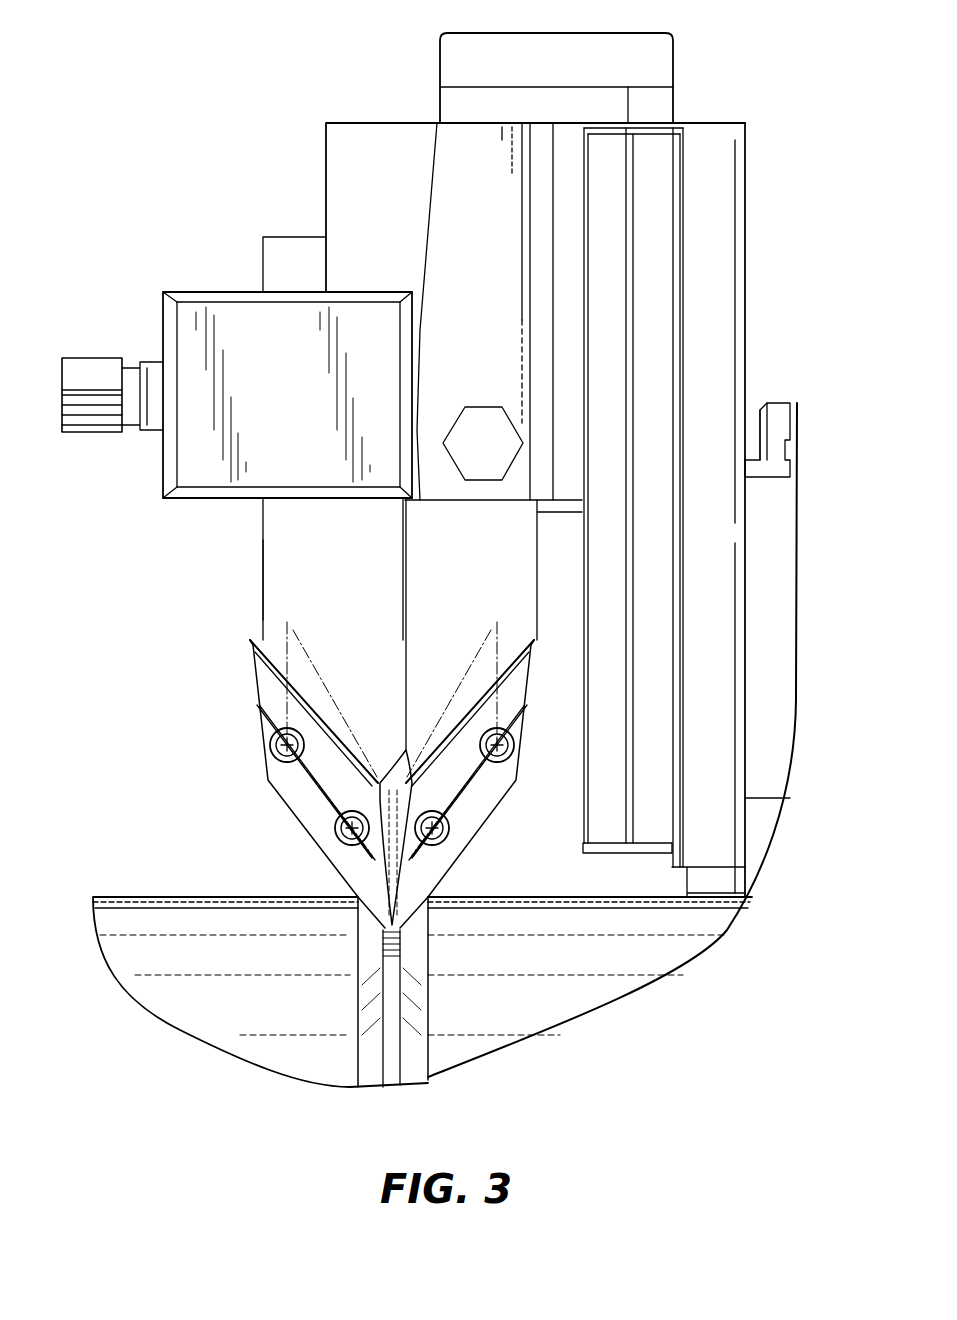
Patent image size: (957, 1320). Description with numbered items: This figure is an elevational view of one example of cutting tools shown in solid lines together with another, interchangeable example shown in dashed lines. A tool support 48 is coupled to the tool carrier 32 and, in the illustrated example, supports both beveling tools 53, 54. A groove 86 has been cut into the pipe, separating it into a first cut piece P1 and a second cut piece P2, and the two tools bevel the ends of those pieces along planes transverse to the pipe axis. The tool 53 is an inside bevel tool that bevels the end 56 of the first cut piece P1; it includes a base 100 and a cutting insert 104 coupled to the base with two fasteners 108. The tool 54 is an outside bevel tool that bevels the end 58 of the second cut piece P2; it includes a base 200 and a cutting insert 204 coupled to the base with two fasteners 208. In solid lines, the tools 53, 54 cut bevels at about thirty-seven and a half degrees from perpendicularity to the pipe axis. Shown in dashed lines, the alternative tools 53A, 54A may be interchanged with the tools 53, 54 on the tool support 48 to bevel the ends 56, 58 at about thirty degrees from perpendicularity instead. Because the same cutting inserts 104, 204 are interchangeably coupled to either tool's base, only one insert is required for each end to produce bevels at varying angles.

The tool support 48 is at (383, 115).
The tool carrier 32 is at (772, 588).
The base 100 is at (458, 542).
The base 200 is at (330, 547).
The cutting insert 204 is at (277, 643).
The cutting insert 104 is at (507, 643).
The fasteners 208 is at (270, 742).
The fasteners 108 is at (517, 747).
The tool 54 is at (284, 815).
The tool 53 is at (494, 824).
The tool 54A is at (317, 664).
The tool 53A is at (470, 662).
The groove 86 is at (390, 975).
The end 58 is at (384, 1000).
The end 56 is at (409, 1040).
The first cut piece P1 is at (657, 927).
The second cut piece P2 is at (158, 915).